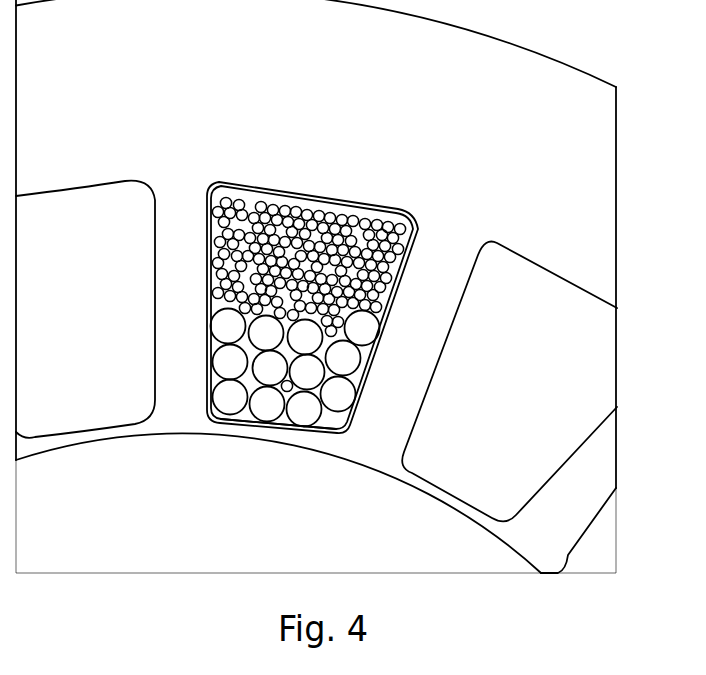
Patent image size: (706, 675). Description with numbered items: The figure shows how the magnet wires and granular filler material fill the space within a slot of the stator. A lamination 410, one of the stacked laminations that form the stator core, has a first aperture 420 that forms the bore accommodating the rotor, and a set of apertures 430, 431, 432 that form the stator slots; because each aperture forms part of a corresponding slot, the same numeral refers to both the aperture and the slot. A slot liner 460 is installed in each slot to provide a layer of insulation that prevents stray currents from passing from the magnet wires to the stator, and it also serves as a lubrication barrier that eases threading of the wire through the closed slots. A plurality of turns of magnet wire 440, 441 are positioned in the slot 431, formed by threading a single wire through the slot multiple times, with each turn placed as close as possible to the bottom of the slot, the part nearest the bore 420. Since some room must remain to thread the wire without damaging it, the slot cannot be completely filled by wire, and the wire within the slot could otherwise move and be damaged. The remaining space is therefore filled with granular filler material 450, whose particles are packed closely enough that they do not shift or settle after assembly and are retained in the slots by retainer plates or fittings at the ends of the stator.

The lamination 410 is at (149, 71).
The first aperture 420 is at (174, 437).
The slot 430 is at (112, 334).
The slot 431 is at (335, 437).
The slot 432 is at (535, 404).
The turn of magnet wire 440 is at (285, 418).
The turn of magnet wire 441 is at (327, 418).
The granular filler material 450 is at (347, 199).
The slot liner 460 is at (235, 423).